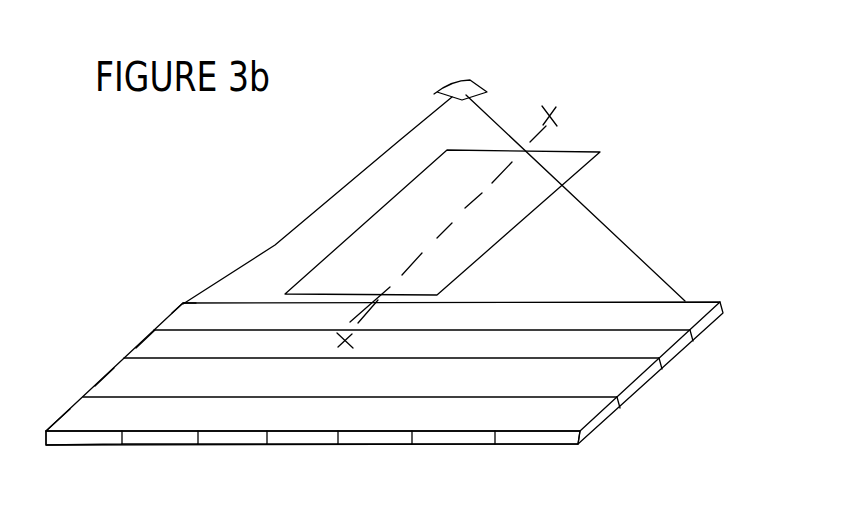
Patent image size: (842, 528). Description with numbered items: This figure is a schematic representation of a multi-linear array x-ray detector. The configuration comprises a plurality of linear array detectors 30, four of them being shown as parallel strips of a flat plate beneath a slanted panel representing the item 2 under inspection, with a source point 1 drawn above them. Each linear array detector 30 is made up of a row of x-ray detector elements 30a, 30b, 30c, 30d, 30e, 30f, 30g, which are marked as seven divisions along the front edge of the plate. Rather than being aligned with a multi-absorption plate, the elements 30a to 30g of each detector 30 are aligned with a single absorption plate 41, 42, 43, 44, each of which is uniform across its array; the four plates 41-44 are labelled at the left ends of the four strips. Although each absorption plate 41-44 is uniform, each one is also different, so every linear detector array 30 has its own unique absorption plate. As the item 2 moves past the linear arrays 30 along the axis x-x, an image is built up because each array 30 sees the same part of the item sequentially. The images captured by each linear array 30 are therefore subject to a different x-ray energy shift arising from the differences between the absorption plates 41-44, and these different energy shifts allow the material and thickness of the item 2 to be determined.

The light source / viewing point 1 is at (455, 82).
The item 2 is at (585, 160).
The linear array detector 30 is at (703, 327).
The x-ray detector element 30a is at (55, 446).
The x-ray detector element 30b is at (133, 446).
The x-ray detector element 30c is at (213, 446).
The x-ray detector element 30d is at (280, 446).
The x-ray detector element 30e is at (353, 436).
The x-ray detector element 30f is at (433, 436).
The x-ray detector element 30g is at (528, 434).
The absorption plate 41 is at (70, 404).
The absorption plate 42 is at (105, 377).
The absorption plate 43 is at (146, 340).
The absorption plate 44 is at (182, 303).